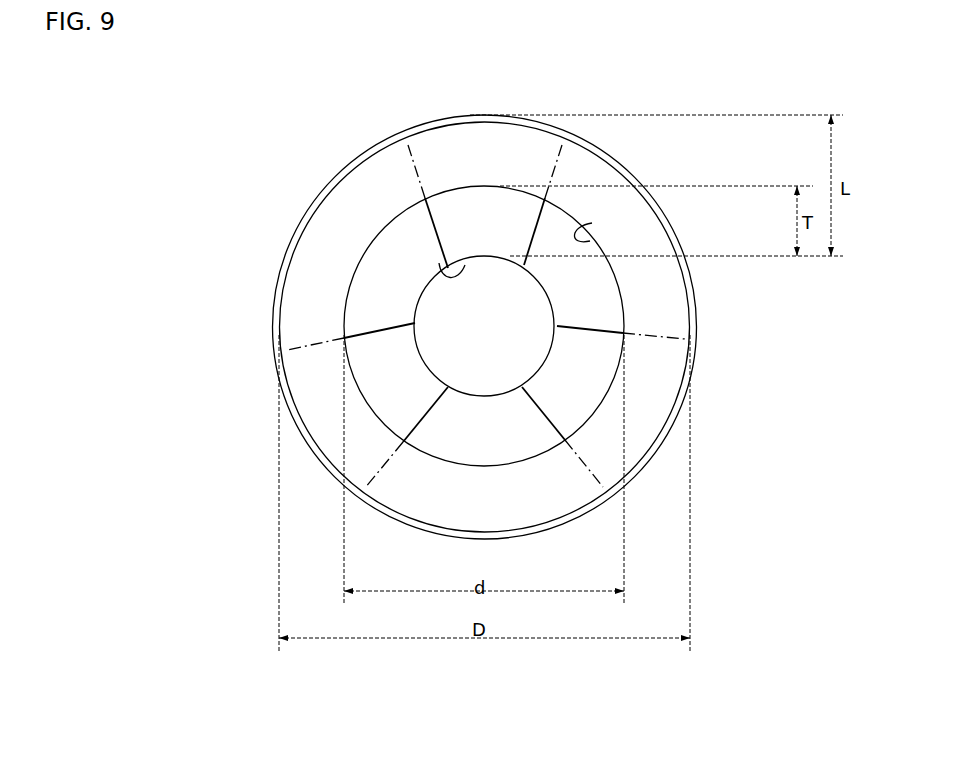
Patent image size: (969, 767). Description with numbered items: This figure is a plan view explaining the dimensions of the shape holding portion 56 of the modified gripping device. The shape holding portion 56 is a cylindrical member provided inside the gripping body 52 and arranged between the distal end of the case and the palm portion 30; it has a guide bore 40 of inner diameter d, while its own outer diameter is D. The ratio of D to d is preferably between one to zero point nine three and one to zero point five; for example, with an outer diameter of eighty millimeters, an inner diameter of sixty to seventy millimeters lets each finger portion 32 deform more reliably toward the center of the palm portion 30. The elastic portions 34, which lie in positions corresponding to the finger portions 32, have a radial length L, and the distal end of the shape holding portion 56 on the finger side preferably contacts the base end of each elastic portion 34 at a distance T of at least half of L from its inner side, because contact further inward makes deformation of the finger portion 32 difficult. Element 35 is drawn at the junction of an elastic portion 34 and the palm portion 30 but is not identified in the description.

The palm portion 30 is at (481, 326).
The finger portion 32 is at (495, 275).
The elastic portion 34 is at (458, 207).
The notch 35 is at (441, 266).
The guide bore 40 is at (593, 237).
The gripping body 52 is at (698, 284).
The shape holding portion 56 is at (704, 311).